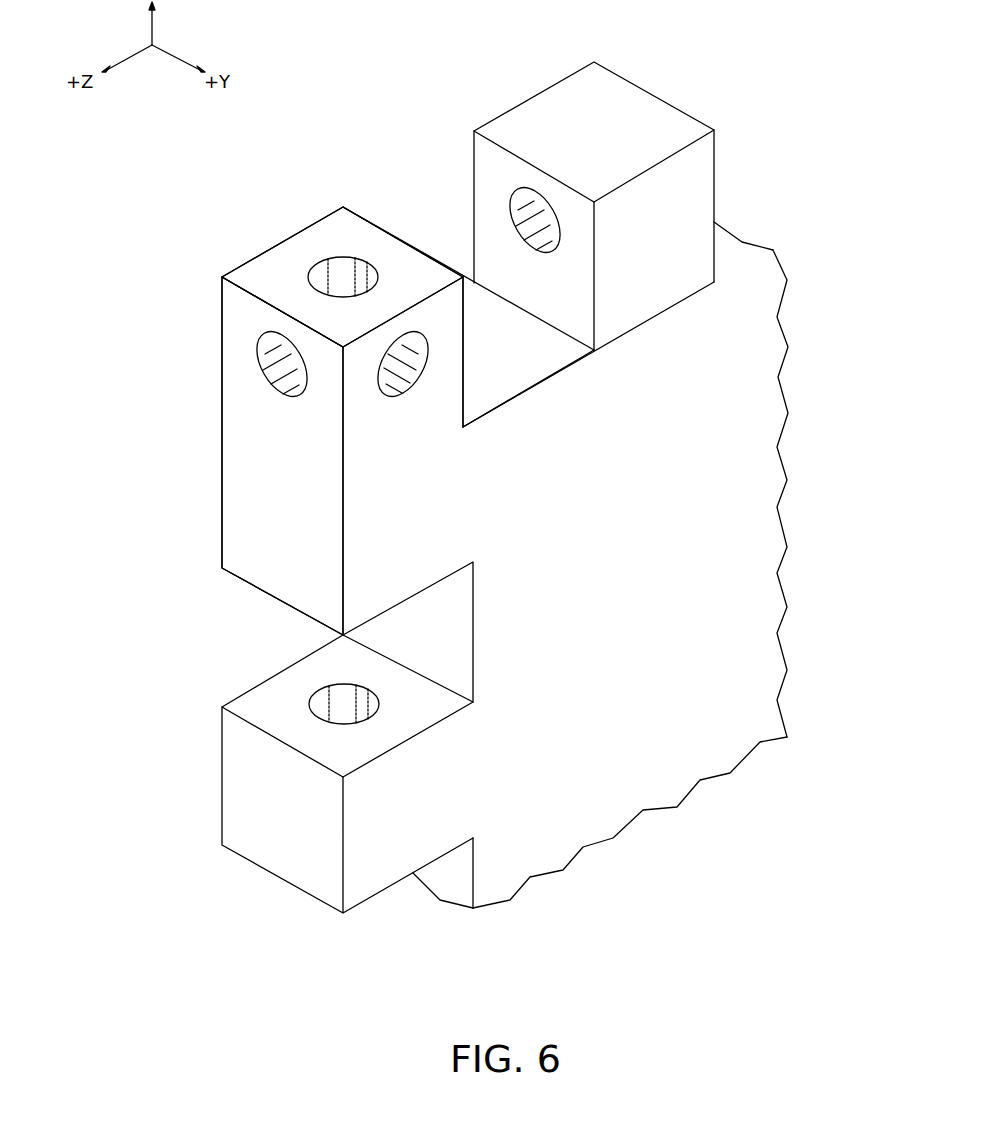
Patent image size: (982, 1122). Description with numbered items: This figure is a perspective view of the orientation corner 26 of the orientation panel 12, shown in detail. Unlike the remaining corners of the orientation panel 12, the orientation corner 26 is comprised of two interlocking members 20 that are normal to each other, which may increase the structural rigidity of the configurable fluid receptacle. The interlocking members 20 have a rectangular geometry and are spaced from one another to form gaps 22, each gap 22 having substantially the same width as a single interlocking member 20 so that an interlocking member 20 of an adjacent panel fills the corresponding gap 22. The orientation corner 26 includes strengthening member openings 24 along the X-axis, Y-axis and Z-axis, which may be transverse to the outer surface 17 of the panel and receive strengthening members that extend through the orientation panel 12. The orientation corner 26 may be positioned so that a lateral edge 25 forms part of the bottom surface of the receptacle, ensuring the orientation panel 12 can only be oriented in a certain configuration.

The orientation panel 12 is at (757, 142).
The outer surface 17 is at (743, 538).
The interlocking member 20 is at (565, 105).
The gap 22 is at (455, 237).
The strengthening member opening 24 is at (512, 207).
The lateral edge 25 is at (243, 452).
The orientation corner 26 is at (313, 197).